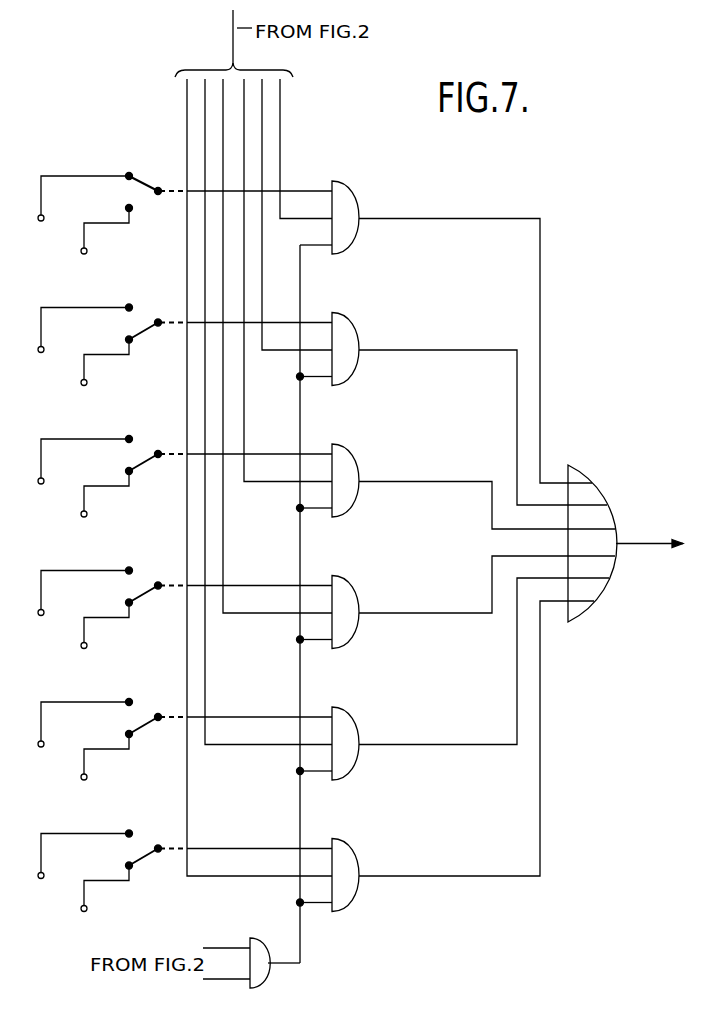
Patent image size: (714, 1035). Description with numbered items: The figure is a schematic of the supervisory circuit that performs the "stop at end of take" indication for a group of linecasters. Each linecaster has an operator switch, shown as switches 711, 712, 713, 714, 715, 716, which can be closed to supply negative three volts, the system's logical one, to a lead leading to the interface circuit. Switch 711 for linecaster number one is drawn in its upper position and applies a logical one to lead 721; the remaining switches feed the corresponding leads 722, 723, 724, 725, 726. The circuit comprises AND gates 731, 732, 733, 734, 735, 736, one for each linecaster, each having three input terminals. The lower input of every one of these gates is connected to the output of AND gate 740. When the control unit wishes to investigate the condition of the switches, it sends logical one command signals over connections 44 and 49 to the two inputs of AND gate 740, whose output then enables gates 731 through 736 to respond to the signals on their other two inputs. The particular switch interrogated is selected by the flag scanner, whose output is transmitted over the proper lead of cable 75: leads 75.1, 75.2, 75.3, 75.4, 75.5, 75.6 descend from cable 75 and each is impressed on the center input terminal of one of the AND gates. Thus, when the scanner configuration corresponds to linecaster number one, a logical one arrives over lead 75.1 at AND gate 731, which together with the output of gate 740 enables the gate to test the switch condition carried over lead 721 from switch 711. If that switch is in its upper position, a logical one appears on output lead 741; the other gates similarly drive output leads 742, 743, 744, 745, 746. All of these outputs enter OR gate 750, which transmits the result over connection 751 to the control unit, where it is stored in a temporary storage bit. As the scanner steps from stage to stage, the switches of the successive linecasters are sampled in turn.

The cable 75 is at (232, 32).
The lead of cable 75 75.1 is at (244, 94).
The lead of cable 75 75.2 is at (263, 122).
The lead of cable 75 75.3 is at (283, 146).
The lead of cable 75 75.4 is at (222, 94).
The lead of cable 75 75.5 is at (205, 122).
The lead of cable 75 75.6 is at (187, 146).
The switch 711 is at (140, 196).
The switch 712 is at (140, 328).
The switch 713 is at (140, 459).
The switch 714 is at (140, 590).
The switch 715 is at (140, 722).
The switch 716 is at (140, 854).
The lead 721 is at (302, 188).
The lead 722 is at (318, 312).
The lead 723 is at (318, 444).
The lead 724 is at (318, 575).
The lead 725 is at (318, 707).
The lead 726 is at (318, 838).
The AND gate 731 is at (352, 203).
The AND gate 732 is at (352, 334).
The AND gate 733 is at (352, 466).
The AND gate 734 is at (352, 598).
The AND gate 735 is at (352, 729).
The AND gate 736 is at (352, 860).
The AND gate 740 is at (262, 977).
The output lead 741 is at (445, 218).
The output lead 742 is at (448, 349).
The output lead 743 is at (441, 481).
The output lead 744 is at (434, 612).
The output lead 745 is at (441, 744).
The output lead 746 is at (448, 875).
The OR gate 750 is at (598, 497).
The connection 751 is at (660, 549).
The connection 44 is at (211, 946).
The connection 49 is at (215, 984).